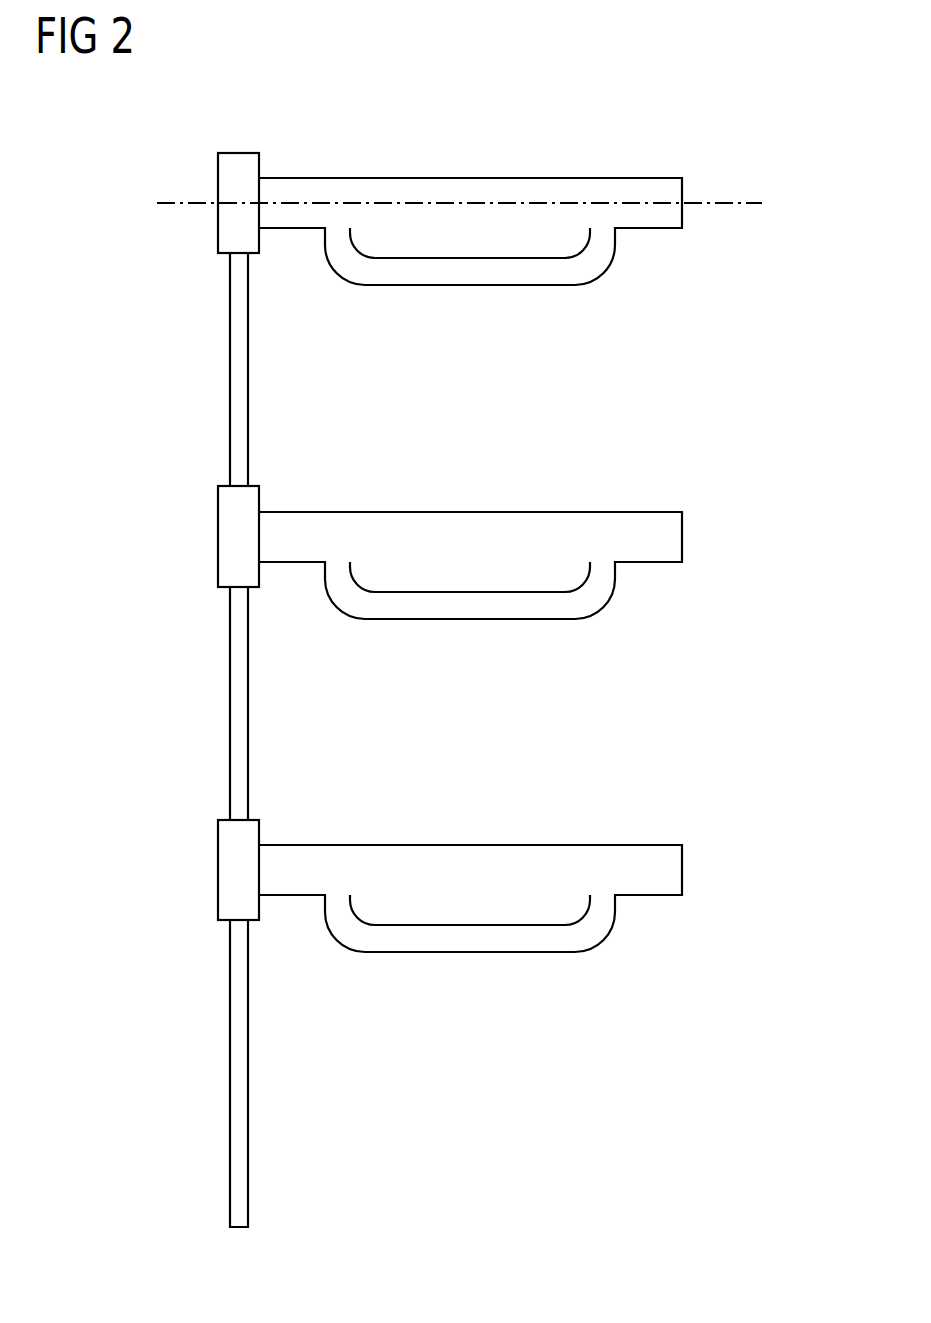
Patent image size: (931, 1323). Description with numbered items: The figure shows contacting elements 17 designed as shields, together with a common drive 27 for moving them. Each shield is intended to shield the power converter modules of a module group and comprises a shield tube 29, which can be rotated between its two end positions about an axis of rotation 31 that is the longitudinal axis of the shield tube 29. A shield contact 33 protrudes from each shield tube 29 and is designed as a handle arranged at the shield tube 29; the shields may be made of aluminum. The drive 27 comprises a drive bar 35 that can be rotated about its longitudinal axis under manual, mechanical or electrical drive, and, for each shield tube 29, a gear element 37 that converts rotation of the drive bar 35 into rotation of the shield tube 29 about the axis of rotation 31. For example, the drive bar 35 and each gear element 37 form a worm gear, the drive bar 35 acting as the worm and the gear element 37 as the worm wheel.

The contacting element 17 is at (560, 165).
The drive 27 is at (205, 1017).
The shield tube 29 is at (397, 178).
The axis of rotation 31 is at (748, 202).
The shield contact 33 is at (462, 285).
The drive bar 35 is at (250, 1120).
The gear element 37 is at (219, 178).